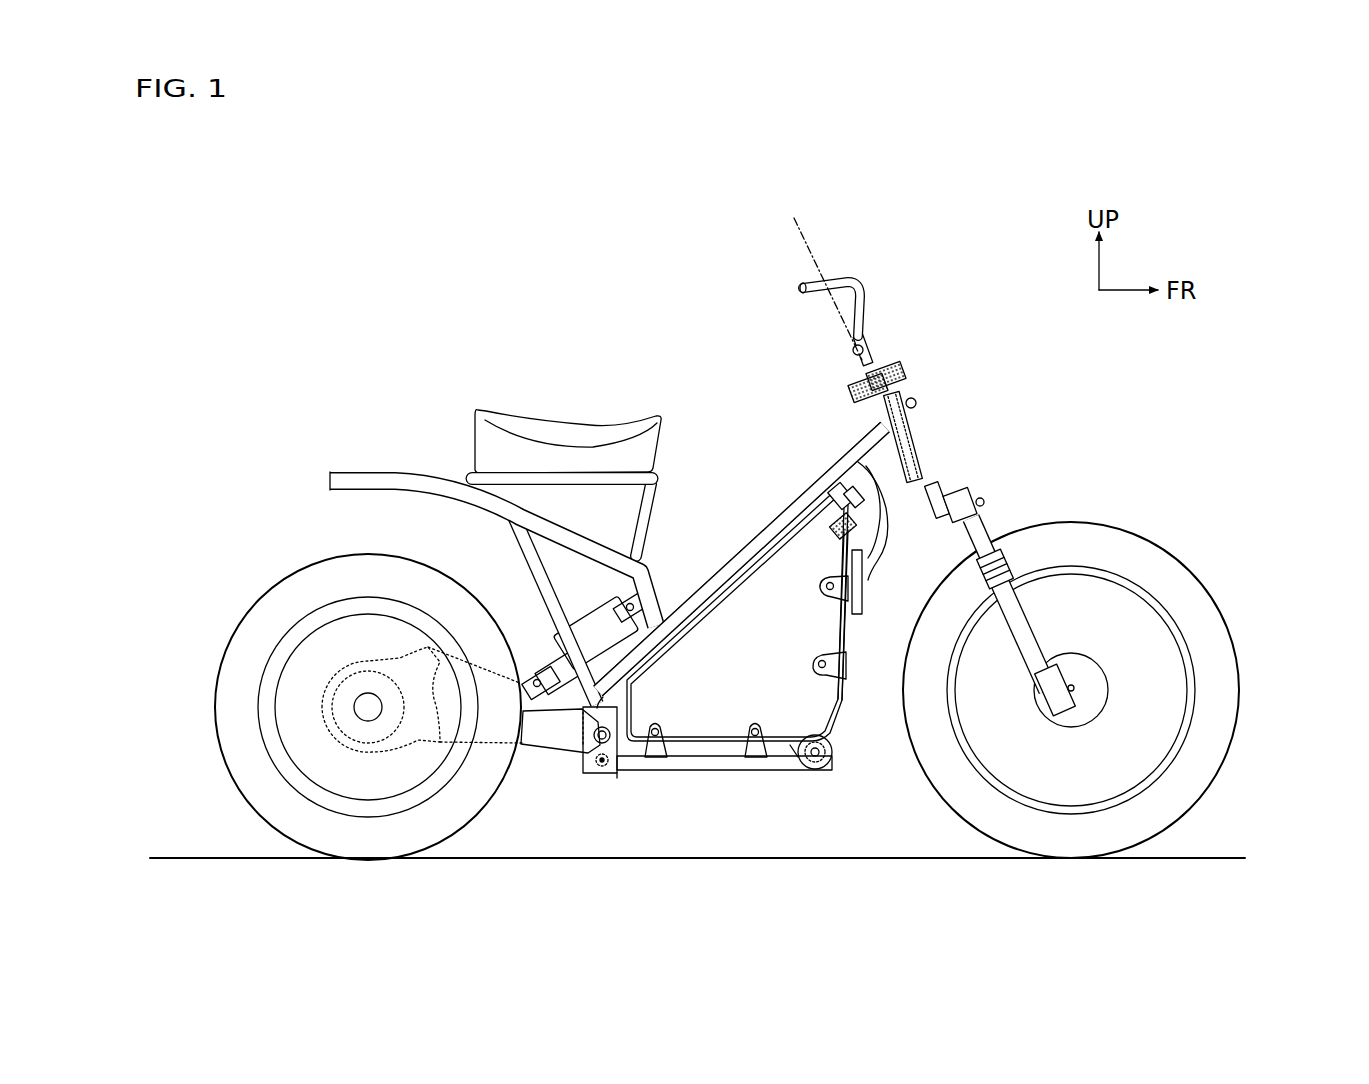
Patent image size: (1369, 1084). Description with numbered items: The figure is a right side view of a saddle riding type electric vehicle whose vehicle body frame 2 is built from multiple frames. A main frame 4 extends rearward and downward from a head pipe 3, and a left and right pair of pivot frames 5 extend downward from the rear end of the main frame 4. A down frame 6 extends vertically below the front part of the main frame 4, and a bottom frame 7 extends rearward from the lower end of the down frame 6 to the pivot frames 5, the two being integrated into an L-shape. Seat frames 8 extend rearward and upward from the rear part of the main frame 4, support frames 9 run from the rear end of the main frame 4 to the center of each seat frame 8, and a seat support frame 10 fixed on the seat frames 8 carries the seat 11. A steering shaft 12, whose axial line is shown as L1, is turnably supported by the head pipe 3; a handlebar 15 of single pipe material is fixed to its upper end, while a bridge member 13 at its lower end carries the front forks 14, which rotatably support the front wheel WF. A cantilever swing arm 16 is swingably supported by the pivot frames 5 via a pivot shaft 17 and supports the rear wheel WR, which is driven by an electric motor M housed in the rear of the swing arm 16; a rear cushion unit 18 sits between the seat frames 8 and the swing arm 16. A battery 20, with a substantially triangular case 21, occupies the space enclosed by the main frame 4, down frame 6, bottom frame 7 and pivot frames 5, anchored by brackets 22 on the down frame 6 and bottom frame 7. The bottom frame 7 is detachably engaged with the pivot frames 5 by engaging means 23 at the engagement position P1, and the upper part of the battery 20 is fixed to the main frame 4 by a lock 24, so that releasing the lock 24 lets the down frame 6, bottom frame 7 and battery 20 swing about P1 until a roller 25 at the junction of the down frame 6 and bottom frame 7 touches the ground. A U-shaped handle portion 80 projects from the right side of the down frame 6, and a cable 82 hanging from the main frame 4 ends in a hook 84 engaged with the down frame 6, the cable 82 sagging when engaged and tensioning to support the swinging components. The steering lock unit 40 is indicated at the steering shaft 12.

The vehicle body frame 2 is at (820, 476).
The head pipe 3 is at (916, 433).
The main frame 4 is at (735, 556).
The pivot frames 5 is at (592, 775).
The down frame 6 is at (850, 646).
The bottom frame 7 is at (715, 770).
The seat frames 8 is at (372, 472).
The support frames 9 is at (537, 576).
The seat support frame 10 is at (528, 478).
The seat 11 is at (576, 418).
The steering shaft 12 is at (872, 357).
The bridge member 13 is at (969, 503).
The front forks 14 is at (1022, 608).
The handlebar 15 is at (852, 282).
The swing arm 16 is at (524, 760).
The pivot shaft 17 is at (595, 740).
The rear cushion unit 18 is at (598, 633).
The battery 20 is at (842, 714).
The case 21 is at (778, 752).
The brackets 22 is at (752, 728).
The engaging means 23 is at (622, 779).
The lock 24 is at (866, 522).
The roller 25 is at (828, 765).
The steering lock unit 40 is at (906, 360).
The U-shaped handle portion 80 is at (853, 566).
The cable 82 is at (887, 556).
The hook 84 is at (866, 594).
The axial line of the steering shaft L1 is at (800, 240).
The electric motor M is at (318, 690).
The rear wheel WR is at (228, 770).
The front wheel WF is at (1215, 768).
The engagement position P1 is at (604, 768).